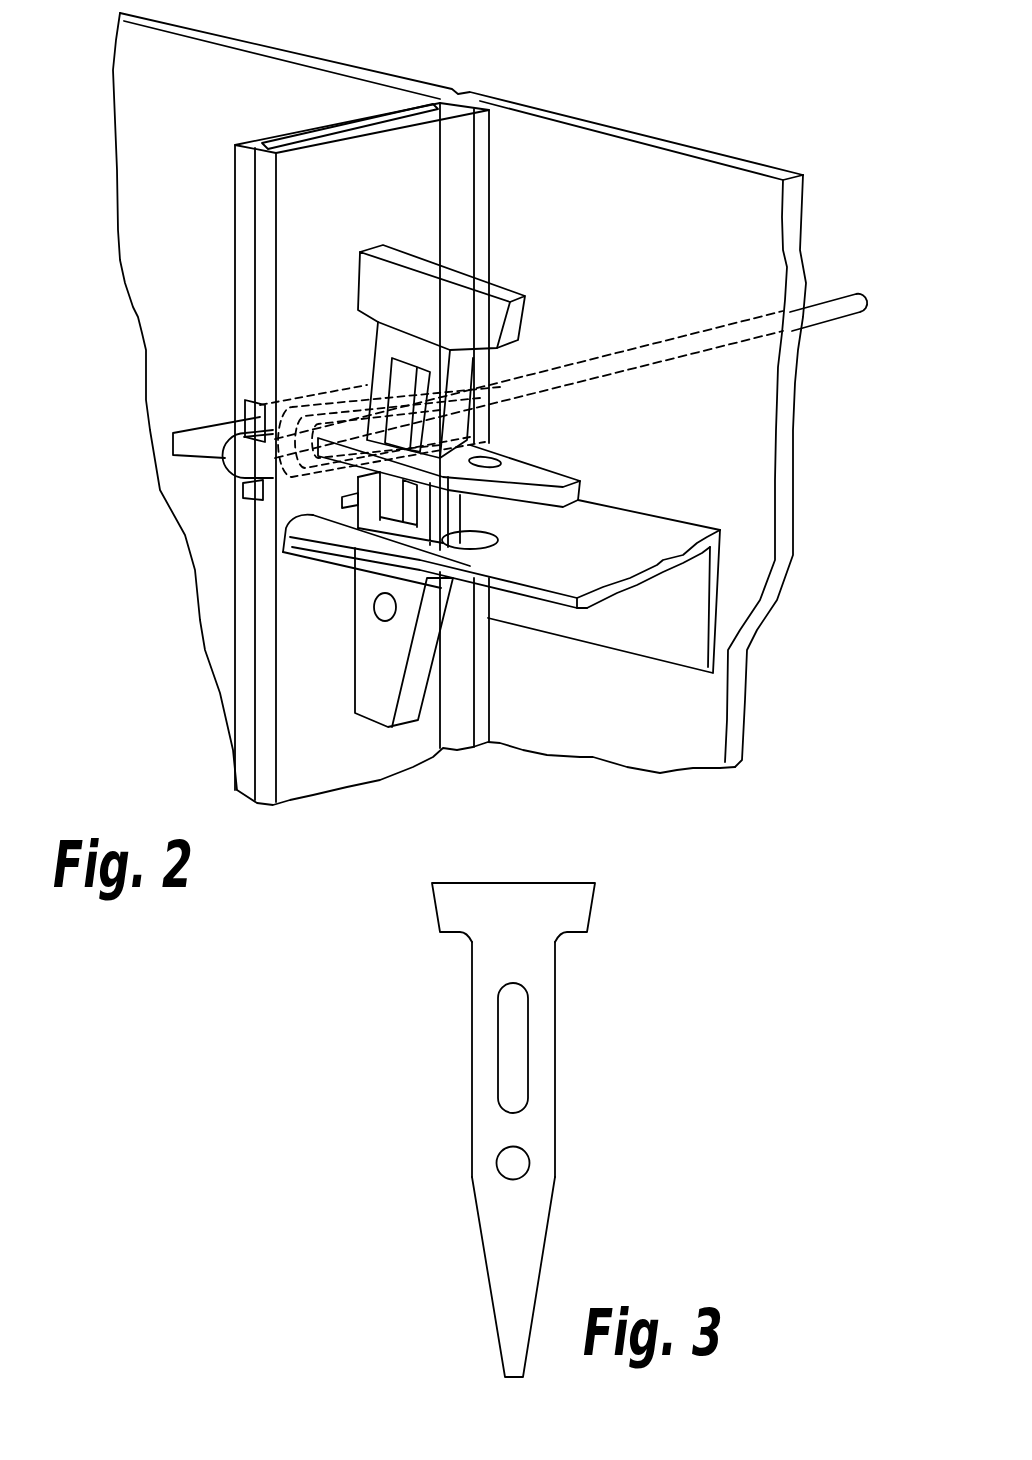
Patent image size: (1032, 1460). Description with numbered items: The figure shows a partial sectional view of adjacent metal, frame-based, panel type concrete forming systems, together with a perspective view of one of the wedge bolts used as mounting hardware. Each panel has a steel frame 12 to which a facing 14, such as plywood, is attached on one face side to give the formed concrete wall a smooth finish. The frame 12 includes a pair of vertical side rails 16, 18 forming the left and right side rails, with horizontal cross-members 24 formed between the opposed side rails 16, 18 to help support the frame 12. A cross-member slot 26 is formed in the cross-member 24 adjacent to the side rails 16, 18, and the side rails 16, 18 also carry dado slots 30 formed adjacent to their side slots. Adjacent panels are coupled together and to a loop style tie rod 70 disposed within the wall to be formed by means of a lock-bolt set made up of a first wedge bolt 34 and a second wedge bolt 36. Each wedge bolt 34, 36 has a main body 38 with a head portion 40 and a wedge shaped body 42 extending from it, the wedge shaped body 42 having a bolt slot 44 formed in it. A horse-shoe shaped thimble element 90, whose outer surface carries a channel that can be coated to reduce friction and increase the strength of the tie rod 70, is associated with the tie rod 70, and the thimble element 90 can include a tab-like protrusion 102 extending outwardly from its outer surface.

In FIG. 2, the steel frame 12 is at (321, 443).
In FIG. 2, the facing 14 is at (308, 50).
In FIG. 2, the vertical side rail 16 is at (280, 262).
In FIG. 2, the vertical side rail 18 is at (233, 207).
In FIG. 2, the cross-member 24 is at (623, 543).
In FIG. 2, the cross-member slot 26 is at (478, 535).
In FIG. 2, the dado slot 30 is at (247, 412).
In FIG. 2, the first wedge bolt 34 is at (241, 422).
In FIG. 3, the first wedge bolt 34 is at (539, 1103).
In FIG. 2, the second wedge bolt 36 is at (490, 297).
In FIG. 3, the main body 38 is at (575, 1010).
In FIG. 3, the head portion 40 is at (489, 882).
In FIG. 3, the wedge shaped body 42 is at (548, 1189).
In FIG. 3, the bolt slot 44 is at (513, 1046).
In FIG. 2, the tie rod 70 is at (820, 318).
In FIG. 2, the thimble element 90 is at (320, 393).
In FIG. 2, the tab-like protrusion 102 is at (233, 470).